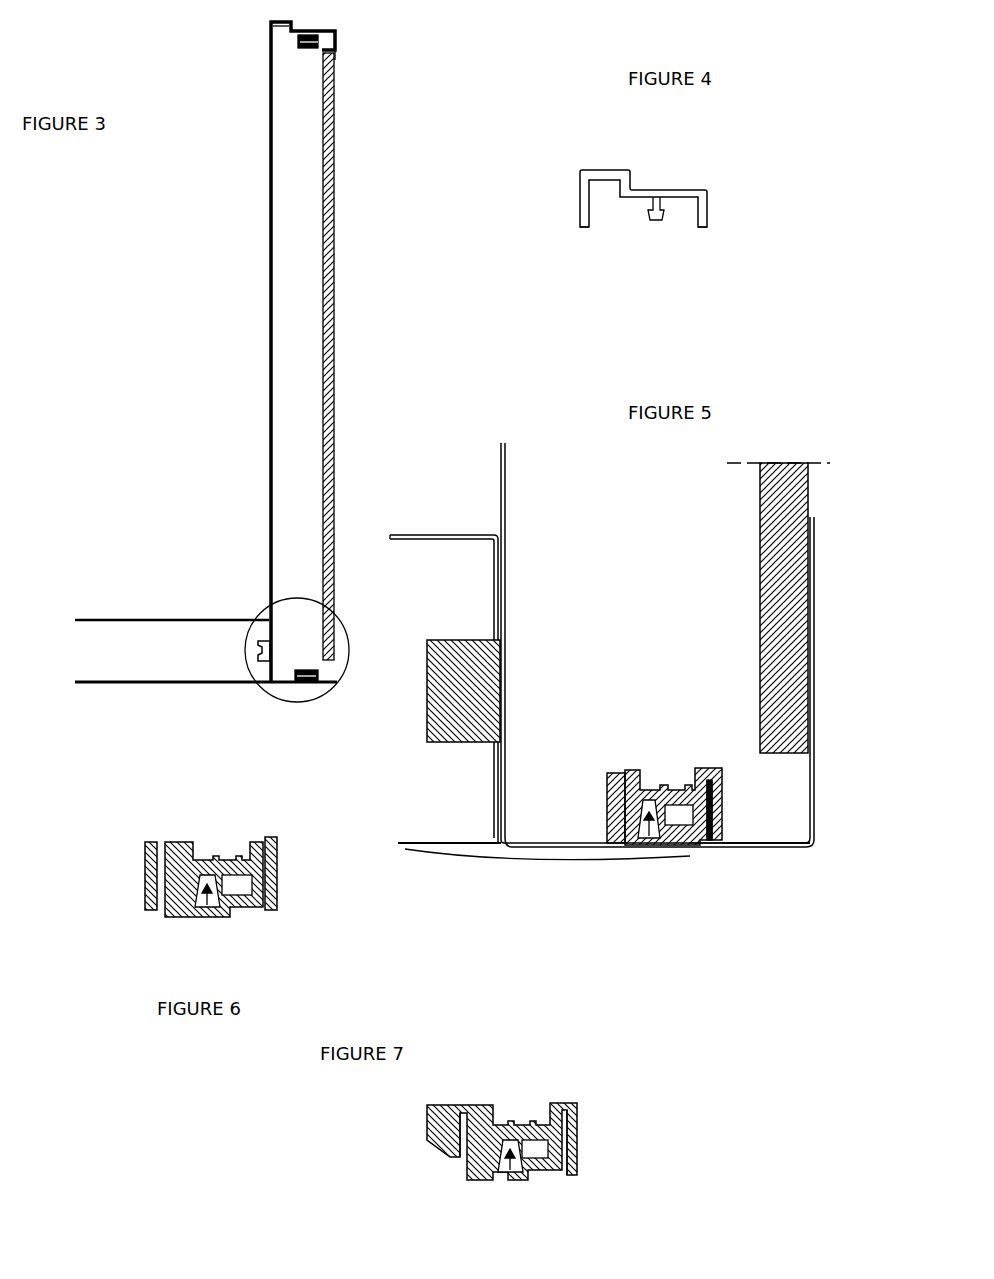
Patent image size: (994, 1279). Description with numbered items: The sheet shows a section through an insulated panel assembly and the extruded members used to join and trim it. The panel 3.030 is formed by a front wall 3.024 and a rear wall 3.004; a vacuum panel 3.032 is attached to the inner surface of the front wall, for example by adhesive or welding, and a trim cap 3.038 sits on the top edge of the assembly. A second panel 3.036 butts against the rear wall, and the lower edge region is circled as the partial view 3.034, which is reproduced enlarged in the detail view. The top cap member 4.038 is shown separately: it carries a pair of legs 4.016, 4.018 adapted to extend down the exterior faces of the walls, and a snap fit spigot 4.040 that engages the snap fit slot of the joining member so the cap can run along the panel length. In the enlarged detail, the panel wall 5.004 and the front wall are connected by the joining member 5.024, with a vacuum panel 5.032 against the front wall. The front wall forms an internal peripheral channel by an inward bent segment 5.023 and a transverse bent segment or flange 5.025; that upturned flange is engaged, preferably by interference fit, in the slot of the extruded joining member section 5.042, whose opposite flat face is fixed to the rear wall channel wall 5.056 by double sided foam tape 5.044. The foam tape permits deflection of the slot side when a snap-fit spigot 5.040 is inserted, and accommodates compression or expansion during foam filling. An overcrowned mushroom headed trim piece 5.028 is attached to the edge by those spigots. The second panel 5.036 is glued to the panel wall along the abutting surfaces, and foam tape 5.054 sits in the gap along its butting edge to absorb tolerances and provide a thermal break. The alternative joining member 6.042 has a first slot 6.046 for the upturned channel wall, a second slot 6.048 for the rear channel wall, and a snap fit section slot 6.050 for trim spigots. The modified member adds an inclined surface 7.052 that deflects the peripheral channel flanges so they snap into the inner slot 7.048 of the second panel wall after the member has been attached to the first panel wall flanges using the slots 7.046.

In FIG. 3, the rear wall 3.004 is at (268, 250).
In FIG. 3, the trim cap 3.038 is at (337, 40).
In FIG. 3, the front wall 3.024 is at (336, 55).
In FIG. 3, the vacuum panel 3.032 is at (325, 365).
In FIG. 3, the panel 3.030 is at (232, 323).
In FIG. 3, the floor rail 3.036 is at (206, 651).
In FIG. 3, the partial view 3.034 is at (265, 610).
In FIG. 4, the top cap member 4.038 is at (724, 139).
In FIG. 4, the clip leg 4.016 is at (580, 210).
In FIG. 4, the clip leg 4.018 is at (715, 205).
In FIG. 4, the snap fit spigot 4.040 is at (660, 217).
In FIG. 5, the panel wall 5.004 is at (500, 475).
In FIG. 5, the foam tape 5.054 is at (427, 742).
In FIG. 5, the insulation panel 5.032 is at (760, 540).
In FIG. 5, the joining member 5.024 is at (808, 812).
In FIG. 5, the second panel 5.036 is at (422, 848).
In FIG. 5, the overcrowned mushroom headed trim piece 5.028 is at (590, 860).
In FIG. 5, the inward bent segment 5.023 is at (782, 840).
In FIG. 5, the clip body 5.042 is at (665, 785).
In FIG. 5, the double sided foam tape 5.044 is at (613, 773).
In FIG. 5, the channel wall 5.056 is at (607, 808).
In FIG. 5, the snap-fit spigot 5.040 is at (650, 822).
In FIG. 5, the transverse bent segment or flange 5.025 is at (738, 850).
In FIG. 6, the clip body 6.042 is at (175, 840).
In FIG. 6, the second slot 6.048 is at (157, 905).
In FIG. 6, the first slot 6.046 is at (318, 950).
In FIG. 6, the snap fit section slot 6.050 is at (207, 903).
In FIG. 7, the inclined surface 7.052 is at (445, 1152).
In FIG. 7, the inner slot 7.048 is at (460, 1160).
In FIG. 7, the slot 7.046 is at (565, 1175).